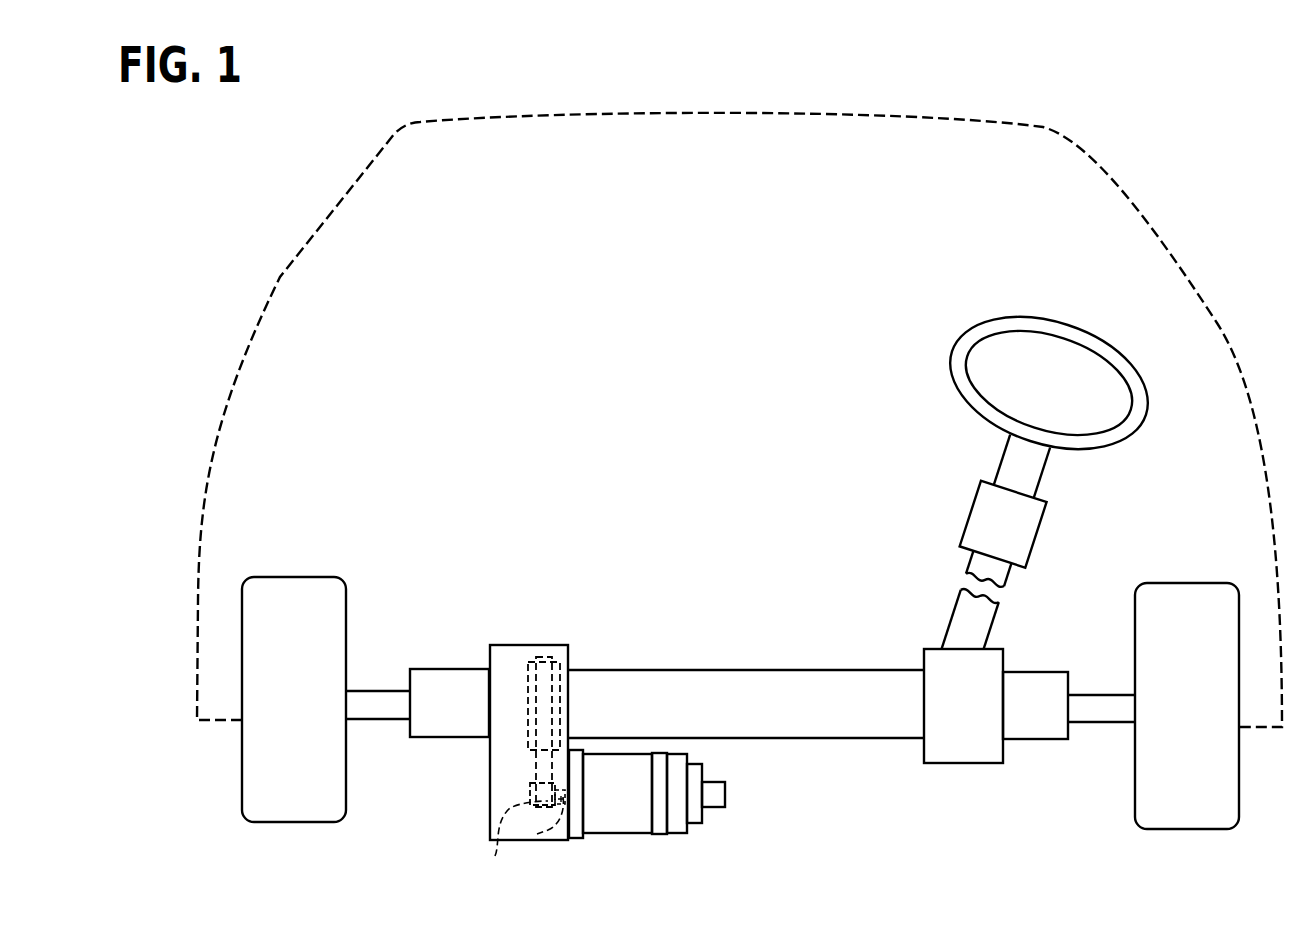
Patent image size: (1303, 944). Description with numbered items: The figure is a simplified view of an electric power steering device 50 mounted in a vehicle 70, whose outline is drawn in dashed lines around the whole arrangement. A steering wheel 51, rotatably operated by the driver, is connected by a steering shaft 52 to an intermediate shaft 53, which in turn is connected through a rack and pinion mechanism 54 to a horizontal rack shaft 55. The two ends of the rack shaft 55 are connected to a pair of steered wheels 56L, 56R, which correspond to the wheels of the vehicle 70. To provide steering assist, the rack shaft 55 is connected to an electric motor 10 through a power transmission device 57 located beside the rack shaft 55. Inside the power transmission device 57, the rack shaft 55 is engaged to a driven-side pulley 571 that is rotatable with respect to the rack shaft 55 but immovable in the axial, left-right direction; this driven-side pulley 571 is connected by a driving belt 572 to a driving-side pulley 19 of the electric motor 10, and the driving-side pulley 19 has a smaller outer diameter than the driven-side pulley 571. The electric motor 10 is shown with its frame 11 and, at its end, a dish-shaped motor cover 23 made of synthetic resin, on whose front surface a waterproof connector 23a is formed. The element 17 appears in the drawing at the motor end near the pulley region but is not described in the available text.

The electric motor 10 is at (610, 827).
The frame 11 is at (658, 830).
The motor shaft end 17 is at (537, 836).
The driving-side pulley 19 is at (513, 834).
The motor cover 23 is at (682, 827).
The waterproof connector 23a is at (725, 795).
The electric power steering device 50 is at (683, 455).
The steering wheel 51 is at (958, 338).
The steering shaft 52 is at (998, 464).
The intermediate shaft 53 is at (950, 620).
The rack and pinion mechanism 54 is at (983, 758).
The rack shaft 55 is at (723, 675).
The steered wheel 56L is at (297, 583).
The steered wheel 56R is at (1190, 588).
The power transmission device 57 is at (532, 646).
The driven-side pulley 571 is at (568, 664).
The driving belt 572 is at (528, 702).
The vehicle 70 is at (330, 190).